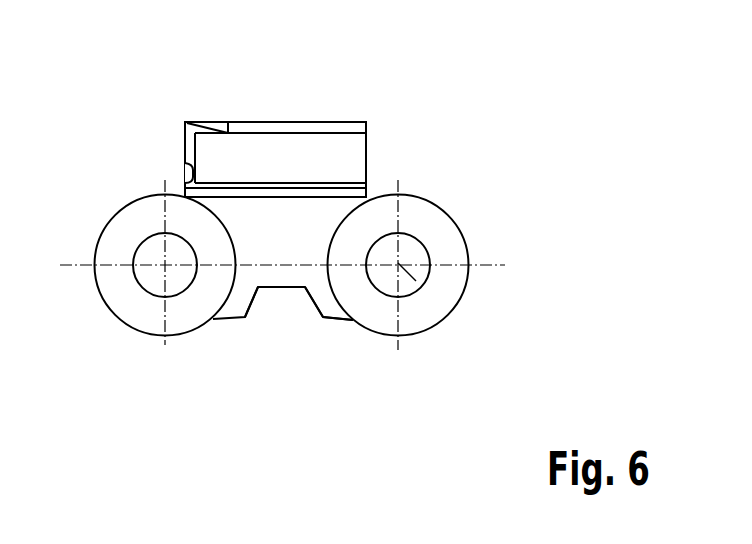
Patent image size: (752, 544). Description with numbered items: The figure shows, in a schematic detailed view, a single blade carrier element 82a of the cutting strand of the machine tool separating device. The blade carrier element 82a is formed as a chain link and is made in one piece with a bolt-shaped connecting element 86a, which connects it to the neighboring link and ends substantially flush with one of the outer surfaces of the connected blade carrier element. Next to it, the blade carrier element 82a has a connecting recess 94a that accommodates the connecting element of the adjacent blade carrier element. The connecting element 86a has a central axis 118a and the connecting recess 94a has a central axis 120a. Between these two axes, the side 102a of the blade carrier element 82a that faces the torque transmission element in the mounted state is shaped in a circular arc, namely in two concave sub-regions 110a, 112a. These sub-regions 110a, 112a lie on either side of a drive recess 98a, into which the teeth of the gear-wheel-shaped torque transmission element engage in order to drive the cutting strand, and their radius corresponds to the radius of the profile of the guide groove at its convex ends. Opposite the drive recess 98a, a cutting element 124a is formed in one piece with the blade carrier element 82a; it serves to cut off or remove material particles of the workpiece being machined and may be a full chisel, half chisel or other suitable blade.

The cutting element 124a is at (315, 129).
The blade carrier element 82a is at (420, 197).
The connecting recess 94a is at (423, 240).
The central axis of connecting element 118a is at (167, 268).
The connecting element 86a is at (160, 292).
The central axis of connecting recess 120a is at (417, 287).
The side 102a is at (283, 337).
The drive recess 98a is at (312, 300).
The sub-region 110a is at (222, 337).
The sub-region 112a is at (353, 342).